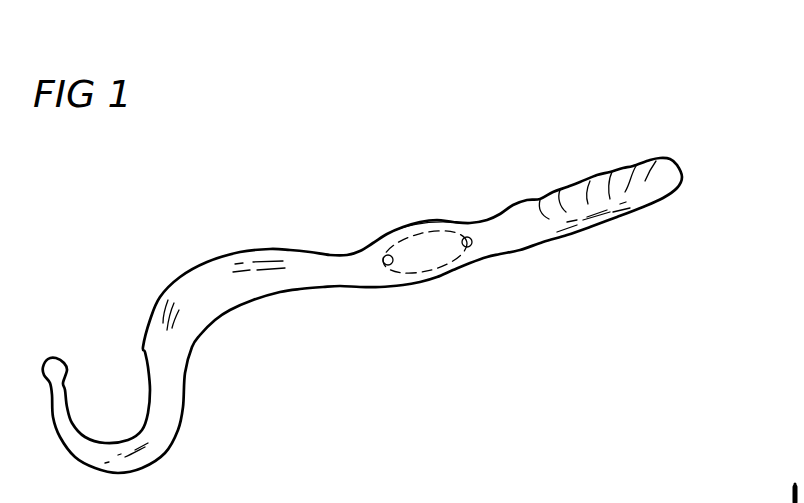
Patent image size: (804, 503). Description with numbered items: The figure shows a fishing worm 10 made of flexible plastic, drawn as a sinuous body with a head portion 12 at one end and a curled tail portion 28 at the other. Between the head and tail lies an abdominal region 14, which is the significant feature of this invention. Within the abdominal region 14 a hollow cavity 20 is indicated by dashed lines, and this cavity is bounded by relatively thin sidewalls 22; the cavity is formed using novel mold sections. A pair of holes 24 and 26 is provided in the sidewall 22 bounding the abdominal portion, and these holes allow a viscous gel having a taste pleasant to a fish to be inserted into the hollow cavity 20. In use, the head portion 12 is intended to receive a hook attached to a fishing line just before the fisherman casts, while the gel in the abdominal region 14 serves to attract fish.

The fishing worm 10 is at (508, 347).
The head portion 12 is at (611, 173).
The abdominal region 14 is at (448, 283).
The hollow cavity 20 is at (443, 245).
The sidewalls 22 is at (405, 227).
The hole 24 is at (388, 265).
The hole 26 is at (472, 245).
The tail portion 28 is at (155, 457).